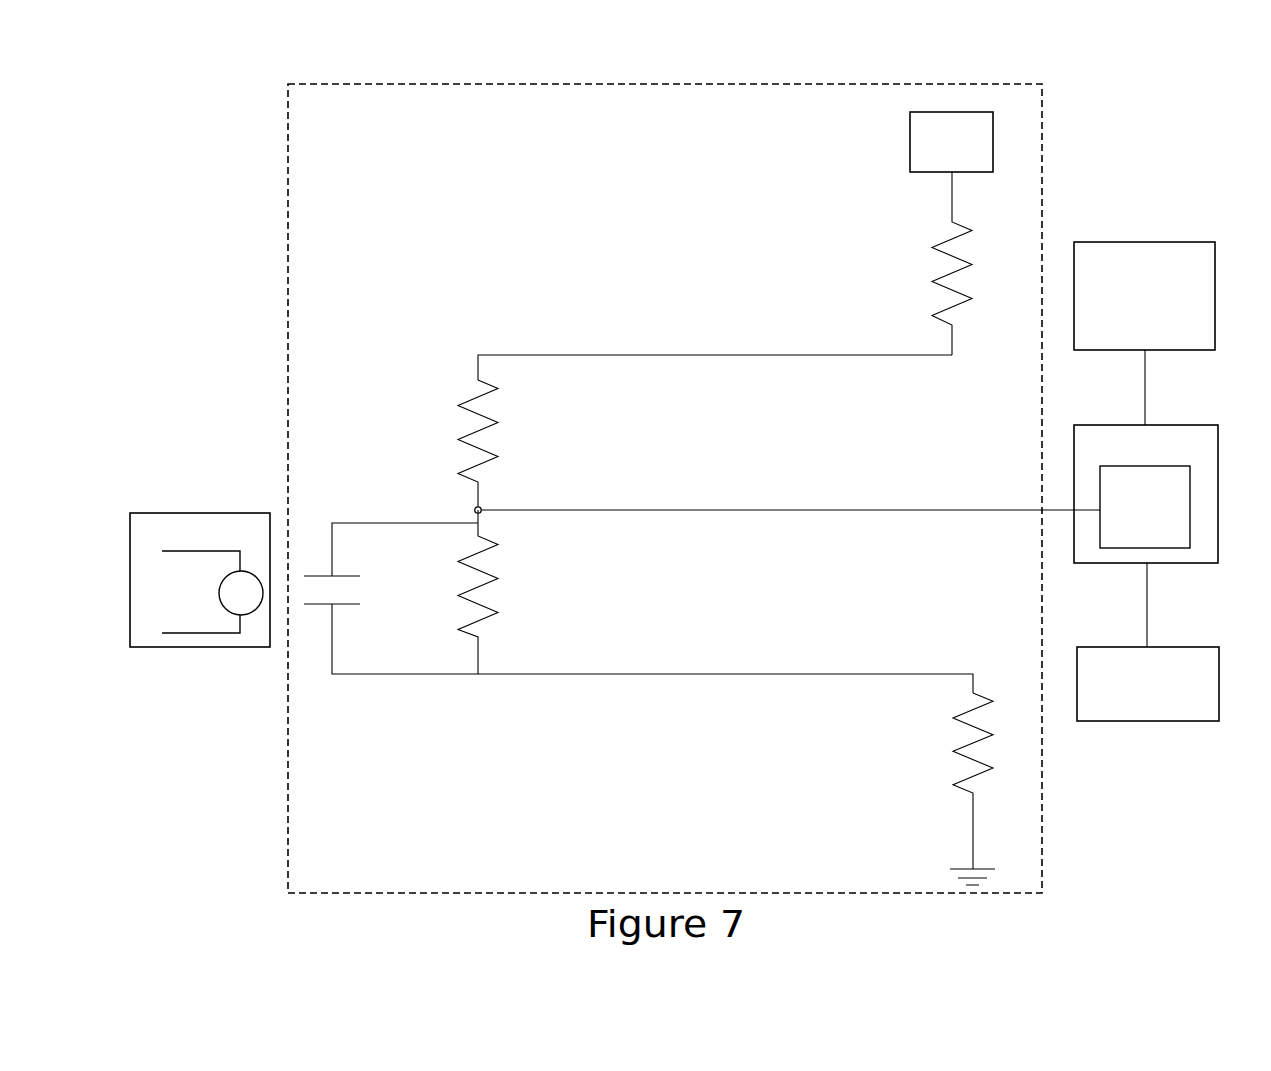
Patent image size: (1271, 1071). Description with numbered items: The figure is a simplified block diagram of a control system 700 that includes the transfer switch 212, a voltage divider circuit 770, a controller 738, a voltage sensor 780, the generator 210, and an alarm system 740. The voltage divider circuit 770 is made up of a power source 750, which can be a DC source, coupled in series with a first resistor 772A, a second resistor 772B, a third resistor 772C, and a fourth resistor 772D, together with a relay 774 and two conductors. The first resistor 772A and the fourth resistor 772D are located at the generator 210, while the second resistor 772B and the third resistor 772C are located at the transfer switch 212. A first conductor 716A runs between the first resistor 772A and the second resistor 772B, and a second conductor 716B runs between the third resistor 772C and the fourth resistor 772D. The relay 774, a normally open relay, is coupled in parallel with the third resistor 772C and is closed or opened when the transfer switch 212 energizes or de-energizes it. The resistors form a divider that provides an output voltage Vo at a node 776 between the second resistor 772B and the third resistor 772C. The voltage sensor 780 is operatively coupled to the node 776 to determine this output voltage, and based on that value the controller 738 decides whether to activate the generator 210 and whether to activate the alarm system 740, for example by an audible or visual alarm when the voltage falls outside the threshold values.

The control system 700 is at (1184, 72).
The voltage divider circuit 770 is at (418, 84).
The power source 750 is at (912, 112).
The first resistor 772A is at (895, 278).
The first conductor 716A is at (695, 355).
The second resistor 772B is at (510, 447).
The node 776 is at (476, 508).
The relay 774 is at (378, 593).
The third resistor 772C is at (522, 596).
The second conductor 716B is at (682, 674).
The fourth resistor 772D is at (918, 752).
The generator 210 is at (1175, 242).
The controller 738 is at (1182, 425).
The voltage sensor 780 is at (1145, 507).
The alarm system 740 is at (1195, 647).
The transfer switch 212 is at (178, 513).